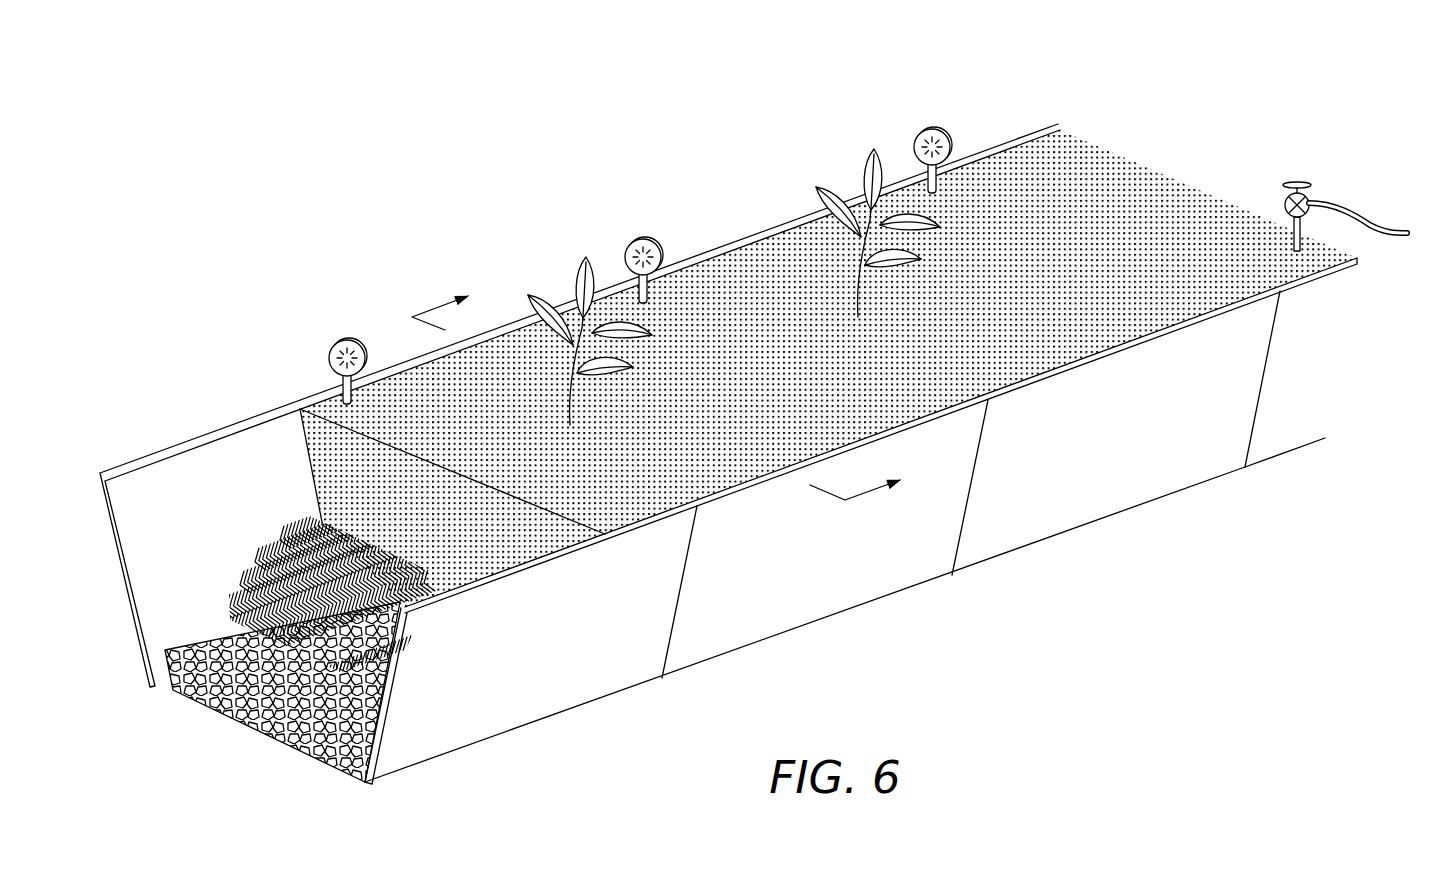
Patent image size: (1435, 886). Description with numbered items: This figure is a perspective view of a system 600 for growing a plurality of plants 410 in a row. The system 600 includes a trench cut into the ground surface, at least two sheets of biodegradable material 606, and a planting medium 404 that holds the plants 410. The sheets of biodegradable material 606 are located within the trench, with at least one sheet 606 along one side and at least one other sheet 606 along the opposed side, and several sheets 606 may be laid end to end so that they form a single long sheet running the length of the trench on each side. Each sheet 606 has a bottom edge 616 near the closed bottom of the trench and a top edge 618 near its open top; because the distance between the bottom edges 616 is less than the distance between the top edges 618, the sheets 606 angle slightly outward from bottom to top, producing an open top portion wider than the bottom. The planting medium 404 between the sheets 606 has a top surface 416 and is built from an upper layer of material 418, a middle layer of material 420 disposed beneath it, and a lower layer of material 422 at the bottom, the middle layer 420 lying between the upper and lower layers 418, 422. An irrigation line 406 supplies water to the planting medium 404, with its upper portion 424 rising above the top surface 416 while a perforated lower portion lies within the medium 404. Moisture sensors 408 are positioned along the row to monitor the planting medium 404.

The system for growing a plurality of plants in a row 600 is at (732, 417).
The planting medium 404 is at (828, 371).
The irrigation line 406 is at (1345, 185).
The moisture sensor 408 is at (350, 340).
The plant 410 is at (552, 297).
The top surface 416 is at (1150, 205).
The upper layer of material 418 is at (487, 523).
The middle layer of material 420 is at (230, 570).
The lower layer of material 422 is at (262, 703).
The upper portion of the irrigation line 424 is at (1290, 237).
The sheet of biodegradable material 606 is at (198, 487).
The bottom edge 616 is at (1043, 568).
The top edge 618 is at (1175, 341).